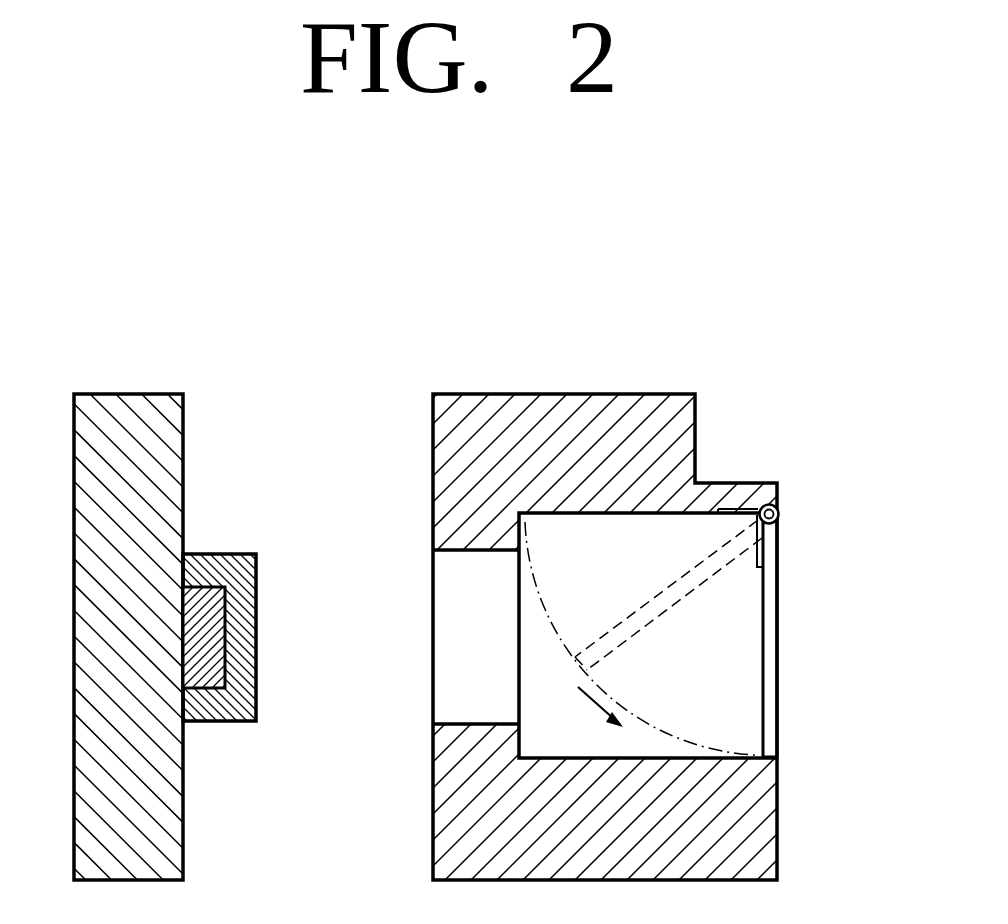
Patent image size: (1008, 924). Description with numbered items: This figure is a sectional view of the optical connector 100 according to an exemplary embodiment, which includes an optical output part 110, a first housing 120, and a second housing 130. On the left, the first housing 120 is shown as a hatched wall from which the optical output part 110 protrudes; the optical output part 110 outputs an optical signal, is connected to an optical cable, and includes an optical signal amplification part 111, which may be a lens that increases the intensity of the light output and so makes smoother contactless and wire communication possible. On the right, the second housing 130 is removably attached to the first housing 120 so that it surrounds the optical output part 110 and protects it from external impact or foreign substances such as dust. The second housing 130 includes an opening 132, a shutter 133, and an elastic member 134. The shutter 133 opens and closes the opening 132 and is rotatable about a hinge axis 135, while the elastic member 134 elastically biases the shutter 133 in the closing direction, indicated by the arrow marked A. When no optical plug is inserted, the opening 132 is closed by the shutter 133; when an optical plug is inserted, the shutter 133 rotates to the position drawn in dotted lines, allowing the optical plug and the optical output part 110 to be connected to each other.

The optical connector 100 is at (367, 263).
The optical output part 110 is at (207, 597).
The optical signal amplification part 111 is at (255, 595).
The first housing 120 is at (112, 400).
The second housing 130 is at (577, 400).
The opening 132 is at (675, 760).
The shutter 133 is at (772, 647).
The elastic member 134 is at (732, 510).
The hinge axis 135 is at (780, 511).